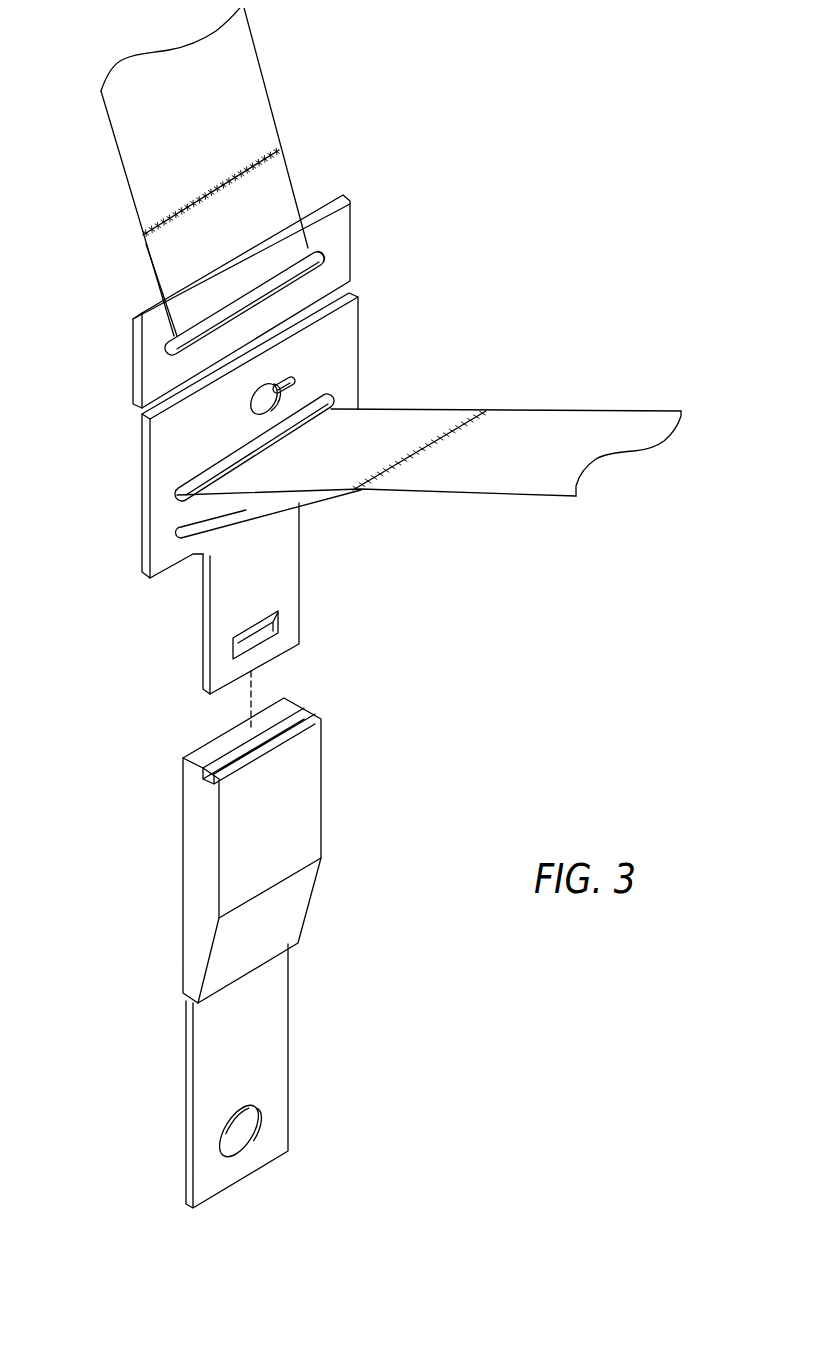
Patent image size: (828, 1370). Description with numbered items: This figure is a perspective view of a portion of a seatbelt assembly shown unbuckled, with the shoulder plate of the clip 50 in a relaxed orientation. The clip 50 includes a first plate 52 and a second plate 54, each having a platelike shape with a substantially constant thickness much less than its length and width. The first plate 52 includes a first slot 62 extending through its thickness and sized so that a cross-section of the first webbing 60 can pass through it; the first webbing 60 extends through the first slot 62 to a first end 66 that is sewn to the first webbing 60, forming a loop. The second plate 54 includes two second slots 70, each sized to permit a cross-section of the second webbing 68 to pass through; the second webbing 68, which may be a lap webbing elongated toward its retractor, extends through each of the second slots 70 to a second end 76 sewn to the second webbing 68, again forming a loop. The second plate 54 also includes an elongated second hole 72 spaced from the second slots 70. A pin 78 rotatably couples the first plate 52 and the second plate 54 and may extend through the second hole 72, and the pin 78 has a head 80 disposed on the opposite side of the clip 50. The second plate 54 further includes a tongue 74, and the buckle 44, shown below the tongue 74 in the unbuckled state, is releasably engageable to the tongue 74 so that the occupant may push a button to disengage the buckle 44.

The buckle 44 is at (323, 794).
The clip 50 is at (138, 450).
The first plate 52 is at (350, 252).
The second plate 54 is at (358, 330).
The first webbing 60 is at (258, 62).
The first slot 62 is at (320, 254).
The first end 66 is at (253, 155).
The second webbing 68 is at (608, 410).
The second slots 70 is at (176, 494).
The second hole 72 is at (293, 387).
The tongue 74 is at (298, 596).
The second end 76 is at (452, 430).
The pin 78 is at (280, 384).
The head 80 is at (249, 402).